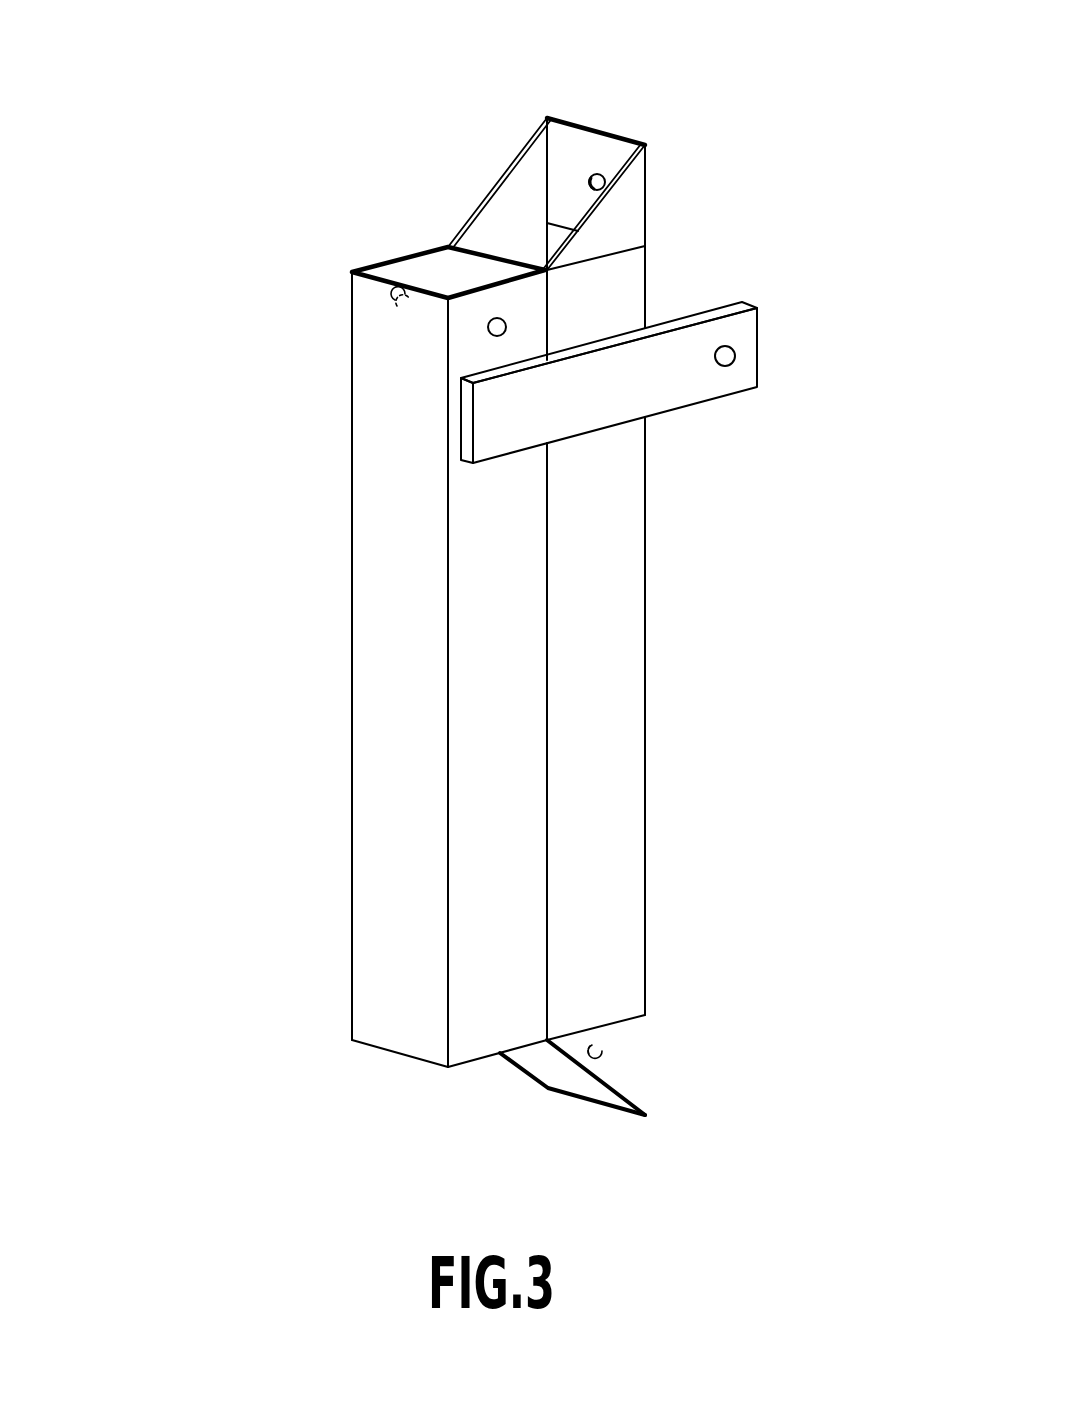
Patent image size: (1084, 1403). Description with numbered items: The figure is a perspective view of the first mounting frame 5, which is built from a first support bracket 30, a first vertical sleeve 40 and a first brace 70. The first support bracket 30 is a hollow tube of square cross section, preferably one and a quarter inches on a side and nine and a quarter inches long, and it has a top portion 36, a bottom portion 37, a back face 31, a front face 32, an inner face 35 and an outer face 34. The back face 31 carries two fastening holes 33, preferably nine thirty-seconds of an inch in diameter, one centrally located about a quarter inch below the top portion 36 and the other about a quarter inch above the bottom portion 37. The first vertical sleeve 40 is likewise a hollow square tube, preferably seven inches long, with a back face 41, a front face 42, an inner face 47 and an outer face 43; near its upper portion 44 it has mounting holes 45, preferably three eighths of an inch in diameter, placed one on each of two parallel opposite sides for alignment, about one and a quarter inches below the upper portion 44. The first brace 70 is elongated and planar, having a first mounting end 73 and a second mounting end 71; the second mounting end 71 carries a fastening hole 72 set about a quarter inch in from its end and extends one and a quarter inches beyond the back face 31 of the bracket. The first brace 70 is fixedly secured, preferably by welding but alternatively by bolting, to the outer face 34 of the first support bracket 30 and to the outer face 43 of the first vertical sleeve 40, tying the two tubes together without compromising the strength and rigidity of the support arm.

The first mounting frame 5 is at (290, 100).
The first support bracket 30 is at (683, 779).
The back face 31 is at (645, 608).
The front face 32 is at (553, 892).
The fastening holes 33 is at (599, 174).
The outer face 34 is at (590, 698).
The inner face 35 is at (525, 200).
The top portion 36 is at (567, 120).
The bottom portion 37 is at (567, 1095).
The first vertical sleeve 40 is at (306, 762).
The back face 41 is at (545, 717).
The front face 42 is at (390, 563).
The outer face 43 is at (506, 826).
The upper portion 44 is at (379, 265).
The mounting holes 45 is at (395, 300).
The inner face 47 is at (427, 273).
The first brace 70 is at (768, 288).
The second mounting end 71 is at (758, 352).
The fastening hole 72 is at (727, 366).
The first mounting end 73 is at (523, 362).